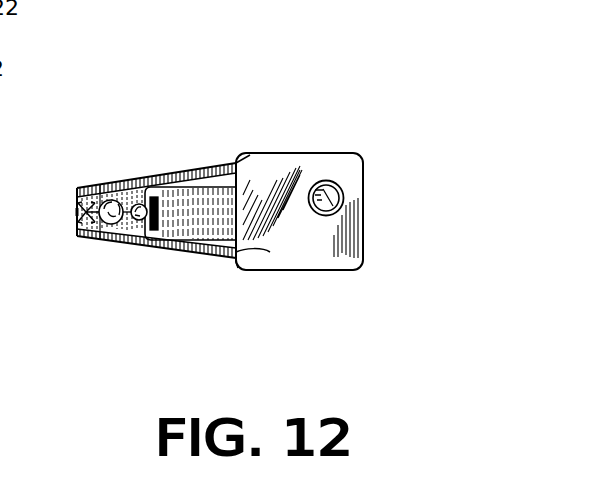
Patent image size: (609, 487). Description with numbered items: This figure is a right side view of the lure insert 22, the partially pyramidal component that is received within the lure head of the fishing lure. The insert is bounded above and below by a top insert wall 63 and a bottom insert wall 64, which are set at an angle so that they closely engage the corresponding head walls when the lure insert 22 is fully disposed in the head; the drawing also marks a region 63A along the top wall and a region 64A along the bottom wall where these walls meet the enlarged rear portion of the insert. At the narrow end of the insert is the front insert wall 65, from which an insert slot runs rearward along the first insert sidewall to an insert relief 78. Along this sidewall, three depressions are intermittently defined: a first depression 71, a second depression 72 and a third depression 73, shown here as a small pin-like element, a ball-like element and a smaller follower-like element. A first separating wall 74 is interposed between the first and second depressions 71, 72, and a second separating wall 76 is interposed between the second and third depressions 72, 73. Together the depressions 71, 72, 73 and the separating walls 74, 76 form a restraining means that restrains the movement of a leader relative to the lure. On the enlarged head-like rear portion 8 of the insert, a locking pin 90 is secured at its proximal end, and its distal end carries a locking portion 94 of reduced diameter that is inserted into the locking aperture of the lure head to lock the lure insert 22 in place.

The lure insert 22 is at (302, 90).
The blade head 8 is at (320, 152).
The top insert wall 63 is at (210, 168).
The body shoulder 63A is at (250, 155).
The bottom insert wall 64 is at (226, 264).
The lower shoulder 64A is at (270, 252).
The front insert wall 65 is at (78, 213).
The first depression 71 is at (78, 216).
The second depression 72 is at (110, 222).
The third depression 73 is at (137, 222).
The first separating wall 74 is at (100, 184).
The second separating wall 76 is at (143, 187).
The insert relief 78 is at (160, 256).
The locking pin 90 is at (340, 186).
The locking portion 94 is at (334, 212).